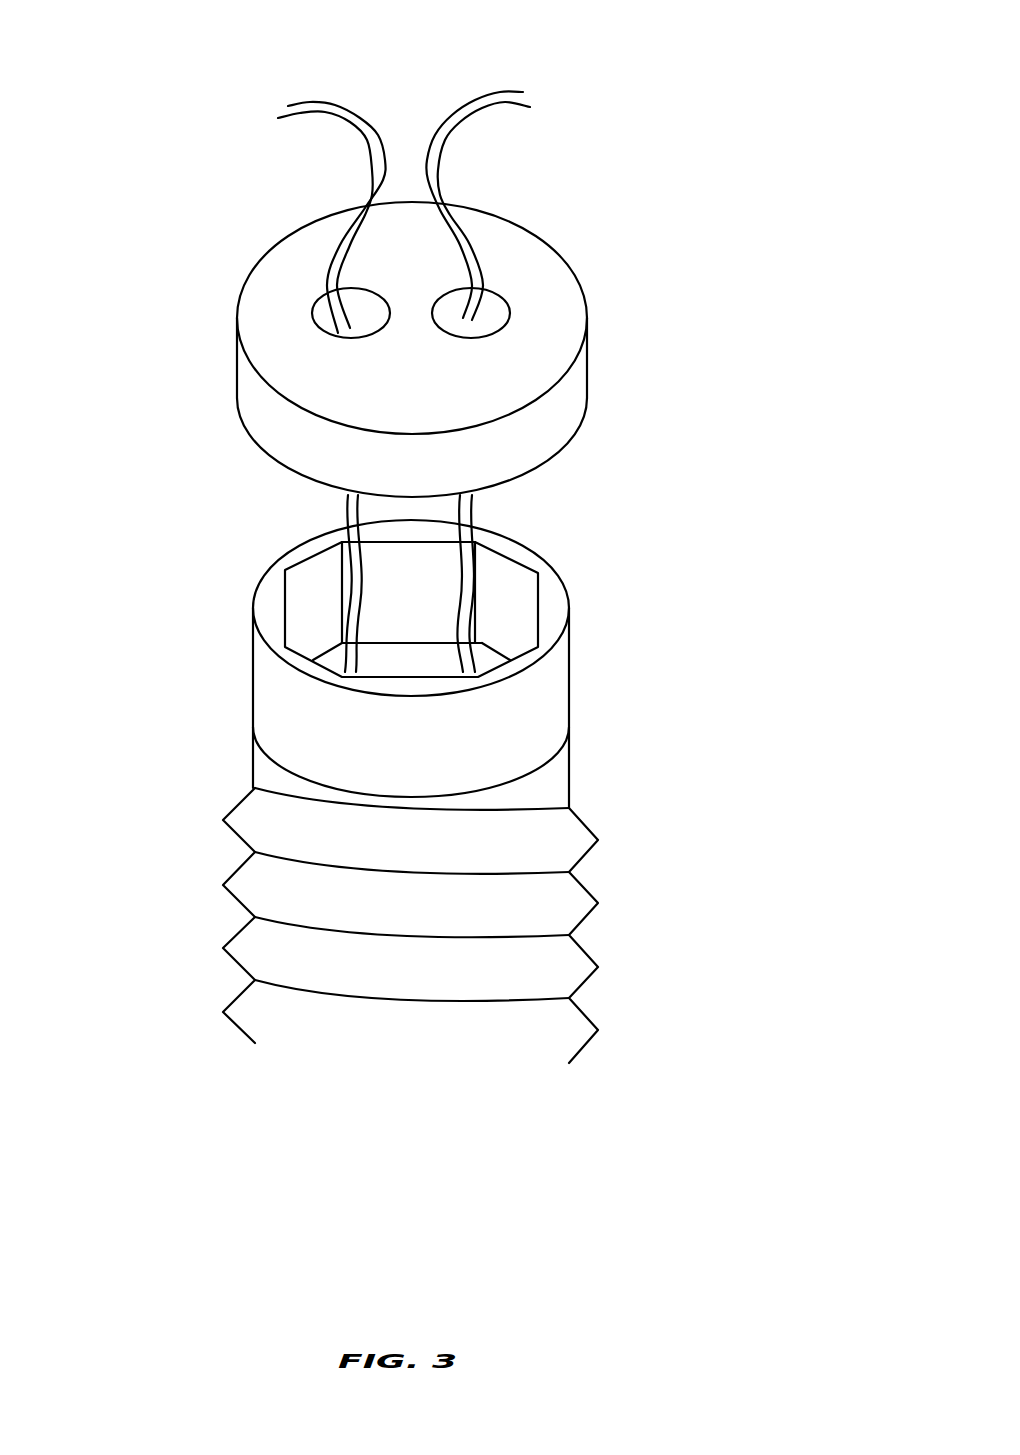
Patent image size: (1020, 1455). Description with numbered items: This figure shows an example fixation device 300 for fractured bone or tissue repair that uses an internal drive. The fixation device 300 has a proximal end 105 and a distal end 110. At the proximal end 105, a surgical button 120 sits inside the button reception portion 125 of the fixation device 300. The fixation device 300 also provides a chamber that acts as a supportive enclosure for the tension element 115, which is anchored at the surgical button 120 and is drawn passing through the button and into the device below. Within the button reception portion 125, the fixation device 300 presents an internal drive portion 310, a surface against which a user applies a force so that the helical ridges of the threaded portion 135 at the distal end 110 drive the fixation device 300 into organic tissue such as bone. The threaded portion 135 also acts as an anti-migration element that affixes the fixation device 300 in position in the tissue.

The fixation device 300 is at (635, 147).
The surgical button 120 is at (507, 277).
The tension element 115 is at (313, 117).
The proximal end 105 is at (198, 779).
The button reception portion 125 is at (598, 758).
The internal drive portion 310 is at (513, 595).
The distal end 110 is at (198, 1044).
The threaded portion 135 is at (542, 988).